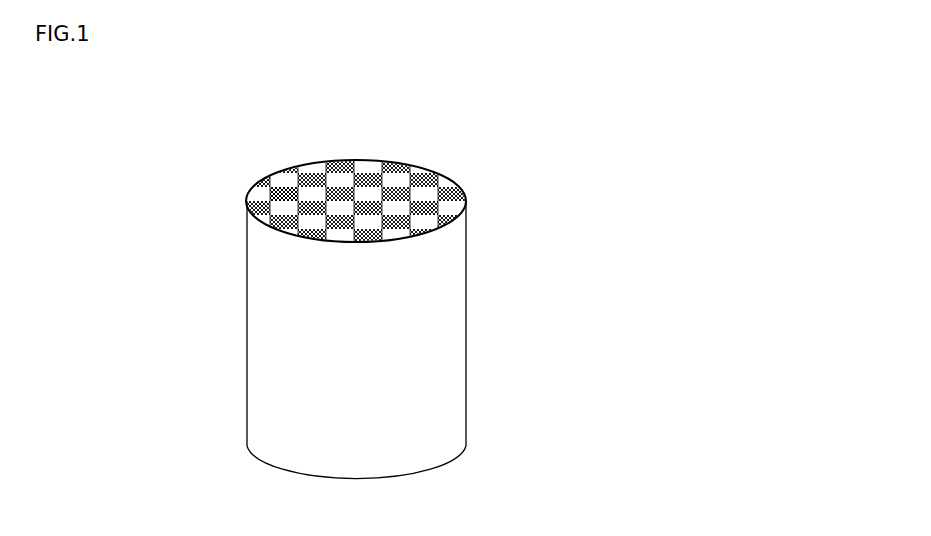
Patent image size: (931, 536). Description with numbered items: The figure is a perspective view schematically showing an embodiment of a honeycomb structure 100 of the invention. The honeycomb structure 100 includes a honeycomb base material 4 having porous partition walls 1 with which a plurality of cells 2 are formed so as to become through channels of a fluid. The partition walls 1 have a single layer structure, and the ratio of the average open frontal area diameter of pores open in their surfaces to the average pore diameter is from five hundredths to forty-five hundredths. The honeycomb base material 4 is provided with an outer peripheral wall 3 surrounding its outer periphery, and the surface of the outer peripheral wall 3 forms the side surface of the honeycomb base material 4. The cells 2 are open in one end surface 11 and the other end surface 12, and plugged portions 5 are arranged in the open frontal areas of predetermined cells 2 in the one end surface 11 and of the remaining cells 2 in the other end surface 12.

The honeycomb structure 100 is at (644, 88).
The partition walls 1 is at (360, 164).
The cells 2 is at (280, 178).
The plugged portions 5 is at (297, 174).
The one end surface 11 is at (246, 198).
The other end surface 12 is at (462, 458).
The outer peripheral wall 3 is at (467, 298).
The honeycomb base material 4 is at (468, 362).